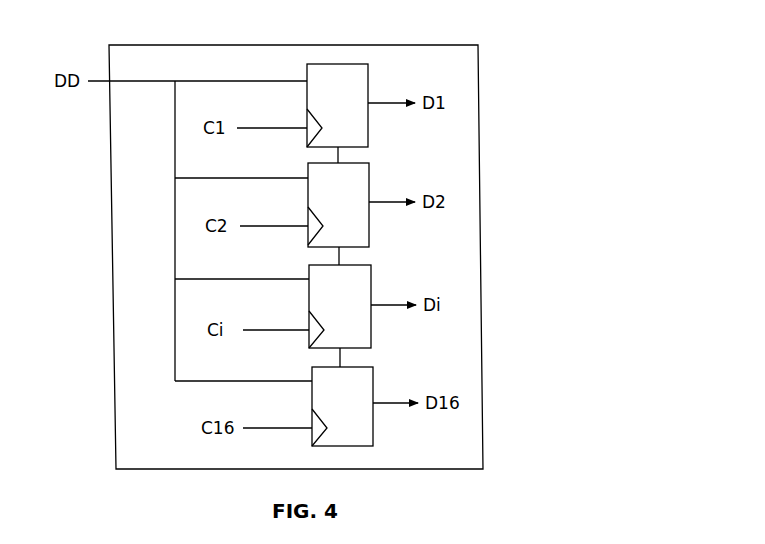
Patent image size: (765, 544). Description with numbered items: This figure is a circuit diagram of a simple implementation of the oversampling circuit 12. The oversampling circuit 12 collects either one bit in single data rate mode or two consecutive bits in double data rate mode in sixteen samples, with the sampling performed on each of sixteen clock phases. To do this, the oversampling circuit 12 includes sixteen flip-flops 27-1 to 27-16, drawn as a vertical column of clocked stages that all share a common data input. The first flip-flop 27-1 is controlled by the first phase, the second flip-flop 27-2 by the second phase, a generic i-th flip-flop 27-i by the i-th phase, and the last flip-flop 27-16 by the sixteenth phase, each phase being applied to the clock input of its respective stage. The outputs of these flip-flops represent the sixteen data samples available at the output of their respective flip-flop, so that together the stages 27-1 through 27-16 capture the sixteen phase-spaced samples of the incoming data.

The oversampling circuit 12 is at (573, 95).
The flip-flop 27-1 is at (368, 80).
The flip-flop 27-2 is at (369, 180).
The flip-flop 27-i is at (371, 282).
The flip-flop 27-16 is at (373, 383).